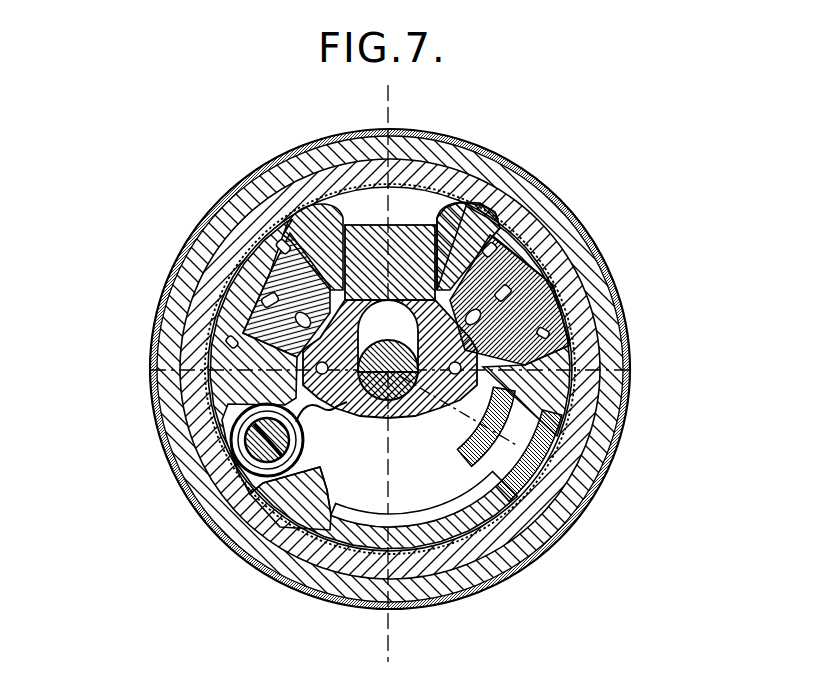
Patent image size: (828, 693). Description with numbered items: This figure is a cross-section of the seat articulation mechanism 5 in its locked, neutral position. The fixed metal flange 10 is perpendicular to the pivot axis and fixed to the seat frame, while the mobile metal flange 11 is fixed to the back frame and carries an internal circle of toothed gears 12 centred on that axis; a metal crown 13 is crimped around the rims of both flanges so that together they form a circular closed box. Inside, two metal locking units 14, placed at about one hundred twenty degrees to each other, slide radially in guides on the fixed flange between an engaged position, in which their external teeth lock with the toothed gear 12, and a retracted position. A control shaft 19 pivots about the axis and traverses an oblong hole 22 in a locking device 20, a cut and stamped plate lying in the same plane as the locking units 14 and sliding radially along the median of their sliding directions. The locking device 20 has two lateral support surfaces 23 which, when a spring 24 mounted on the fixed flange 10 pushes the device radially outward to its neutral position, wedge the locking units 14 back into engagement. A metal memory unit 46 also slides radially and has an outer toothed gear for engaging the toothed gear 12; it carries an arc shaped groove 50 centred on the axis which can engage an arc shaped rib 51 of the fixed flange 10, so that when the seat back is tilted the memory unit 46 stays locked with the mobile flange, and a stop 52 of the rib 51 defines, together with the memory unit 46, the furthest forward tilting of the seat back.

The mechanism 5 is at (616, 158).
The fixed metal flange 10 is at (532, 207).
The mobile metal flange 11 is at (537, 243).
The toothed gear 12 is at (443, 187).
The metal crown 13 is at (498, 172).
The locking unit 14 is at (225, 230).
The control shaft 19 is at (480, 383).
The locking device 20 is at (345, 222).
The oblong hole 22 is at (558, 273).
The lateral support surface 23 is at (255, 283).
The spring 24 is at (231, 436).
The memory unit 46 is at (555, 455).
The arc shaped groove 50 is at (523, 427).
The arc shaped rib 51 is at (443, 513).
The stop 52 is at (285, 520).